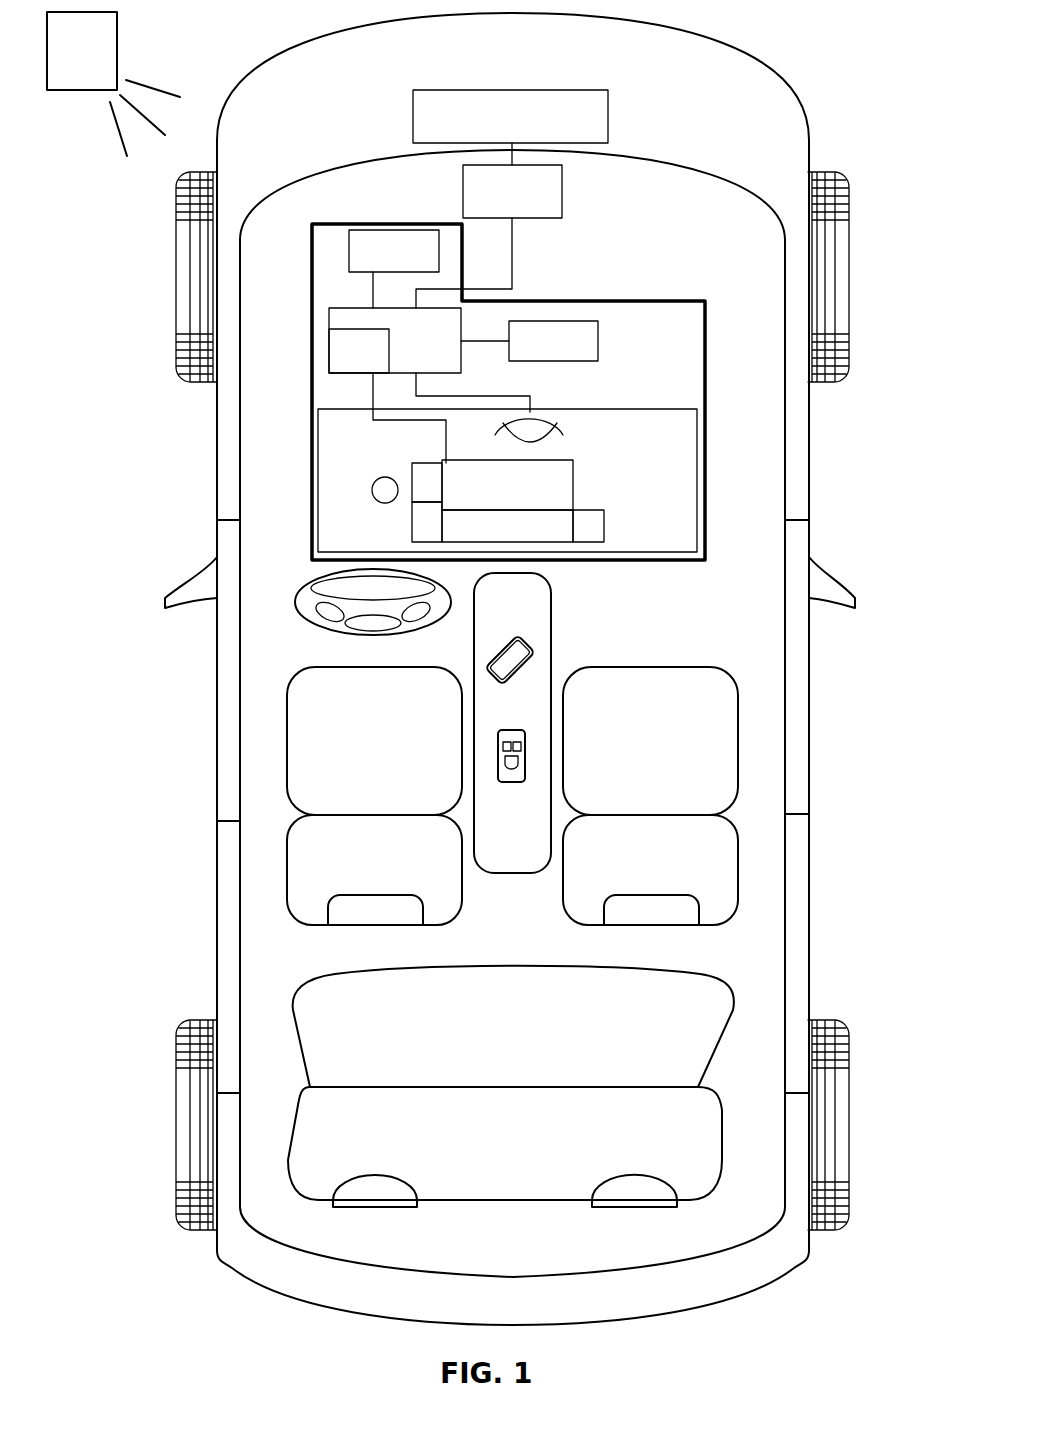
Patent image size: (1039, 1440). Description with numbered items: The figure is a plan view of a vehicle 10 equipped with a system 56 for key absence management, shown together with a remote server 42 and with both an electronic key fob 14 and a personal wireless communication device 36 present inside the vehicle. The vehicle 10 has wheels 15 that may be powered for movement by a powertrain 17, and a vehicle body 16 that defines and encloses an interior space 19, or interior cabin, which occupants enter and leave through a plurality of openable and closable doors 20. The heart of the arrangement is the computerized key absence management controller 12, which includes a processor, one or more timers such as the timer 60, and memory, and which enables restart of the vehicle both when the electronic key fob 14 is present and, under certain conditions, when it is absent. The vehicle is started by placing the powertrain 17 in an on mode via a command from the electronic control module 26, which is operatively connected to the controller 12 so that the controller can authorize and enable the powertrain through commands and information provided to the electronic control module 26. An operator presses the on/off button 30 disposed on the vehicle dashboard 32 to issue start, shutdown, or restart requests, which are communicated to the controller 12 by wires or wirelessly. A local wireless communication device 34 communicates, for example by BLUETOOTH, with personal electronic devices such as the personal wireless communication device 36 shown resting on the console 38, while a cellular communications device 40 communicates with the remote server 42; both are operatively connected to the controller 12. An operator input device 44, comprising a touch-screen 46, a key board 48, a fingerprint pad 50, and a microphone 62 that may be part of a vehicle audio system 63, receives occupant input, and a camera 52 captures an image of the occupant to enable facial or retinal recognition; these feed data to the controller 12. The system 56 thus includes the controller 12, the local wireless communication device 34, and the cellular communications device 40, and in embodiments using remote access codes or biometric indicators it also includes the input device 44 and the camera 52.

The vehicle 10 is at (854, 117).
The key absence management controller 12 is at (438, 357).
The electronic key fob 14 is at (518, 786).
The wheels 15 is at (176, 277).
The vehicle body 16 is at (217, 492).
The powertrain 17 is at (528, 132).
The interior space 19 is at (290, 634).
The doors 20 is at (217, 762).
The electronic control module 26 is at (528, 207).
The on/off button 30 is at (378, 480).
The vehicle dashboard 32 is at (318, 447).
The local wireless communication device 34 is at (410, 267).
The personal wireless communication device 36 is at (532, 652).
The console 38 is at (552, 617).
The cellular communications device 40 is at (569, 357).
The remote server 42 is at (98, 66).
The operator input device 44 is at (575, 494).
The touch-screen 46 is at (523, 501).
The key board 48 is at (523, 541).
The fingerprint pad 50 is at (606, 530).
The camera 52 is at (542, 412).
The system for key absence management 56 is at (312, 330).
The timer 60 is at (375, 367).
The microphone 62 is at (437, 463).
The vehicle audio system 63 is at (412, 517).